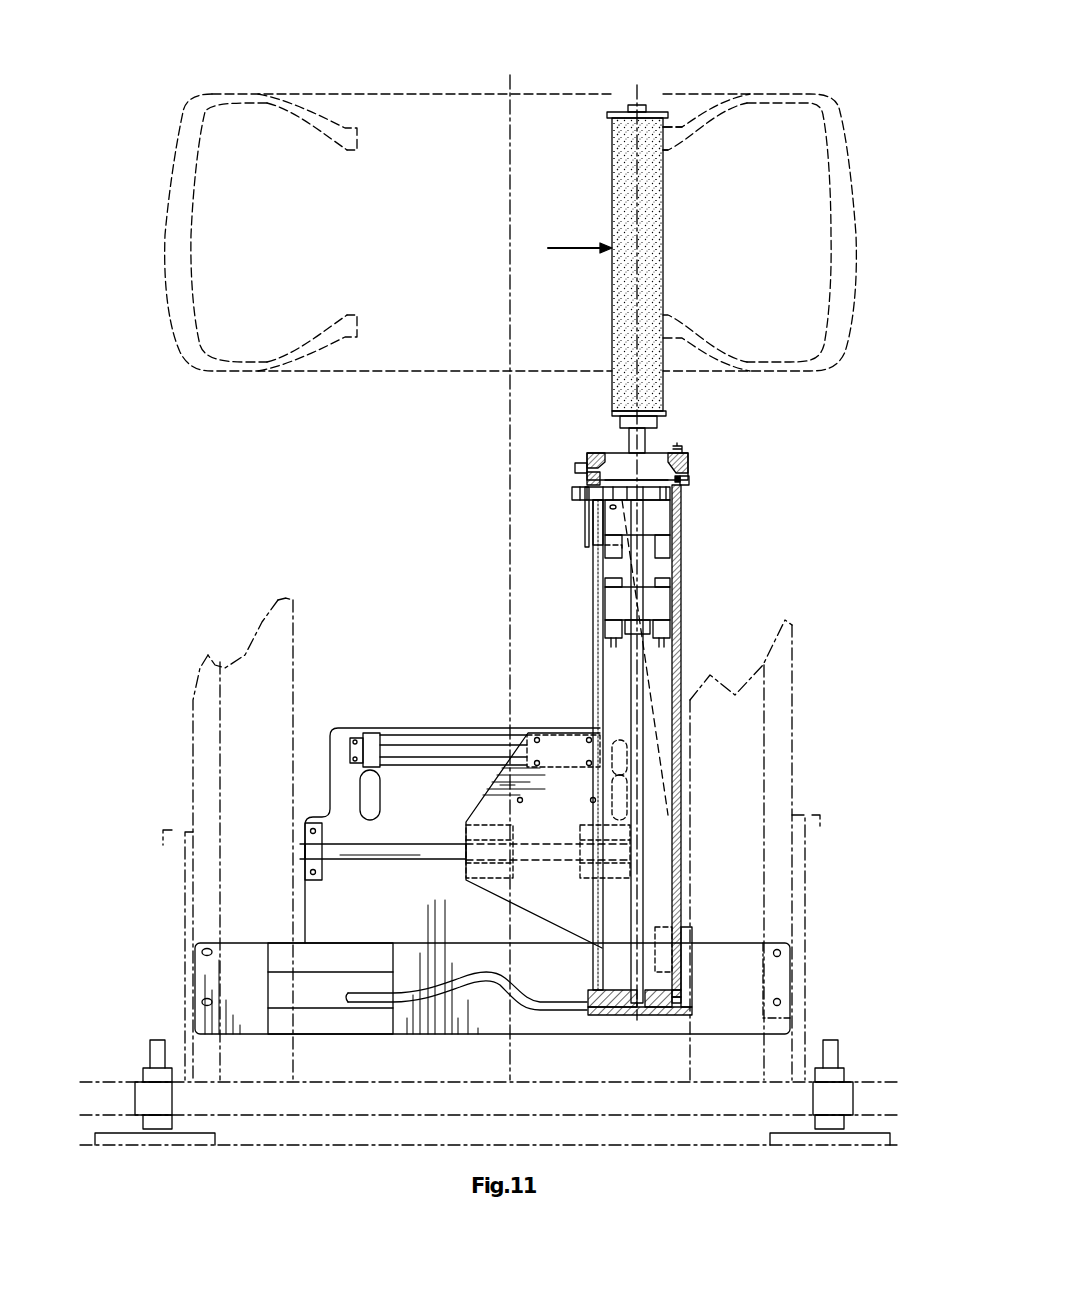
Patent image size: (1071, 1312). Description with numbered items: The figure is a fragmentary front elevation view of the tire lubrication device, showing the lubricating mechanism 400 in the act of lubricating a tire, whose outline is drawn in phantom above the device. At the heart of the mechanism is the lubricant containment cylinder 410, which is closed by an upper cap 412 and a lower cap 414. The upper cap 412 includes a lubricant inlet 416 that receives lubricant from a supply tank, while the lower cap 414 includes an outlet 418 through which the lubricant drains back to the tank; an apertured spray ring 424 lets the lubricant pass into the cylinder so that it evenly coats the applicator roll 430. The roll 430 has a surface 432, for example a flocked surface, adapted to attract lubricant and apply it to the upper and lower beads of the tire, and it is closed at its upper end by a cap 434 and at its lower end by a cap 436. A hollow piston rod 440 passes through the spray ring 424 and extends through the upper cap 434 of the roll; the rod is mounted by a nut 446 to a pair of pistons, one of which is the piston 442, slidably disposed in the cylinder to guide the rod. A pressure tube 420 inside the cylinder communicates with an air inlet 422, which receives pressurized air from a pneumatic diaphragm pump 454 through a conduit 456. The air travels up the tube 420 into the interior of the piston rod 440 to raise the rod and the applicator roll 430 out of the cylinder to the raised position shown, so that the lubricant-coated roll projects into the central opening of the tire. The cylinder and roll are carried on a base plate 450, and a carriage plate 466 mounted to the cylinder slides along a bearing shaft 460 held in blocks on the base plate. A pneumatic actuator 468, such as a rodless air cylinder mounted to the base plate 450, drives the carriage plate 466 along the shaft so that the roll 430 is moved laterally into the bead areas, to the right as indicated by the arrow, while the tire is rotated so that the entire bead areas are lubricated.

The lubricating mechanism 400 is at (793, 513).
The lubricant containment cylinder 410 is at (676, 656).
The upper cap 412 is at (690, 462).
The lower cap 414 is at (650, 1008).
The lubricant inlet 416 is at (575, 468).
The outlet 418 is at (688, 1000).
The pressure tube 420 is at (640, 894).
The air inlet 422 is at (610, 1012).
The apertured spray ring 424 is at (684, 483).
The applicator roll 430 is at (612, 194).
The surface 432 is at (650, 228).
The cap 434 is at (663, 125).
The cap 436 is at (668, 416).
The hollow piston rod 440 is at (632, 106).
The piston 442 is at (615, 598).
The nut 446 is at (635, 636).
The base plate 450 is at (421, 911).
The pneumatic diaphragm pump 454 is at (252, 1013).
The conduit 456 is at (473, 988).
The bearing shaft 460 is at (399, 853).
The carriage plate 466 is at (576, 906).
The pneumatic actuator 468 is at (565, 728).